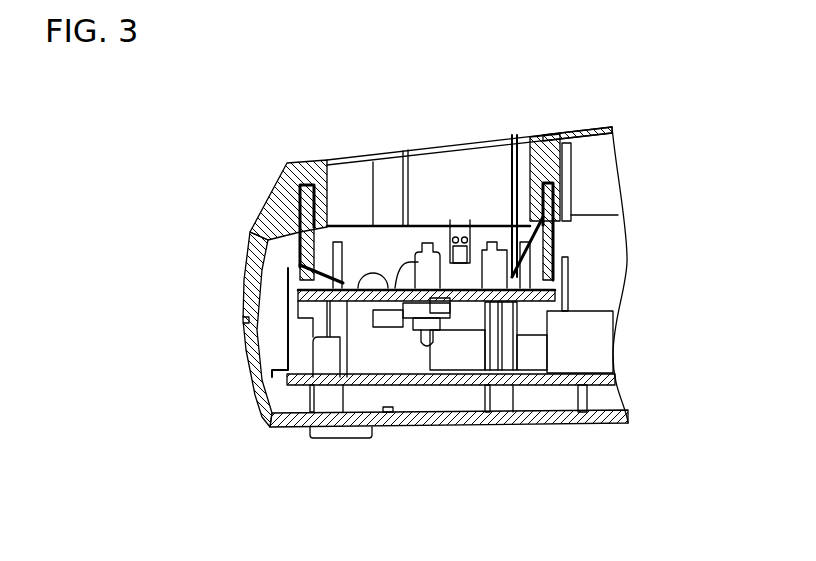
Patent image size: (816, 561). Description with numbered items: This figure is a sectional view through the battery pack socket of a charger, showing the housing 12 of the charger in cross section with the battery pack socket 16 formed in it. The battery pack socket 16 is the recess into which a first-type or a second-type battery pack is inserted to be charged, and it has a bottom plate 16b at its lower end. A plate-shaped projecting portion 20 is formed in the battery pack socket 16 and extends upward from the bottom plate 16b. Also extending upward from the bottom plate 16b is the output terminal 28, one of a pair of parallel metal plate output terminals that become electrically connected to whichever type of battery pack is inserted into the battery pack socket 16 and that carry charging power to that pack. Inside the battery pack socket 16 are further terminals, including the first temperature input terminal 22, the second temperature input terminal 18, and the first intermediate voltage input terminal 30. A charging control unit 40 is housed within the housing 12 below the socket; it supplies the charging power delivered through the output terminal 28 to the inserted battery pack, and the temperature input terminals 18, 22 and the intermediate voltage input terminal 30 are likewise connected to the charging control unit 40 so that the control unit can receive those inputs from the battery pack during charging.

The housing 12 is at (280, 232).
The battery pack socket 16 is at (341, 190).
The bottom plate 16b is at (371, 265).
The second temperature input terminal 18 is at (462, 233).
The plate-shaped projecting portion 20 is at (499, 262).
The first temperature input terminal 22 is at (548, 230).
The output terminal 28 is at (392, 298).
The first intermediate voltage input terminal 30 is at (290, 283).
The charging control unit 40 is at (598, 310).